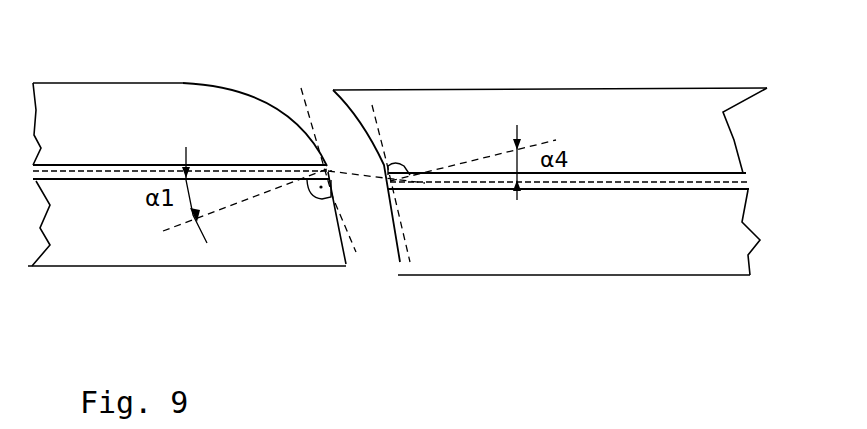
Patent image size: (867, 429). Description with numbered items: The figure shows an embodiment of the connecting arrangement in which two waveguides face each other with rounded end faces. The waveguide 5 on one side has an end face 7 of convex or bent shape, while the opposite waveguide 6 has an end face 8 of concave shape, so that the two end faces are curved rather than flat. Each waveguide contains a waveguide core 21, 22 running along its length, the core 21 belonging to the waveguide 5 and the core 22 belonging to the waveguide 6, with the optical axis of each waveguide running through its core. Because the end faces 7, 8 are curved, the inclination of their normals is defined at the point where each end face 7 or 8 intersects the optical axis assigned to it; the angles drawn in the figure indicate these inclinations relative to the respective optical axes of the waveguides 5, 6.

The waveguide 5 is at (120, 268).
The waveguide 6 is at (630, 277).
The end face 7 is at (258, 101).
The end face 8 is at (338, 94).
The waveguide core 21 is at (72, 181).
The waveguide core 22 is at (575, 190).